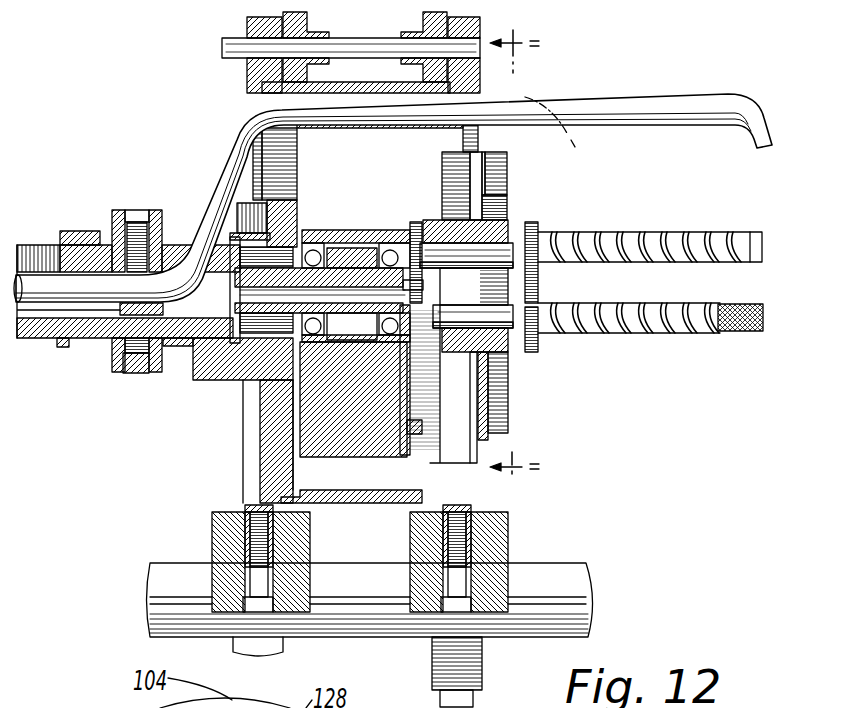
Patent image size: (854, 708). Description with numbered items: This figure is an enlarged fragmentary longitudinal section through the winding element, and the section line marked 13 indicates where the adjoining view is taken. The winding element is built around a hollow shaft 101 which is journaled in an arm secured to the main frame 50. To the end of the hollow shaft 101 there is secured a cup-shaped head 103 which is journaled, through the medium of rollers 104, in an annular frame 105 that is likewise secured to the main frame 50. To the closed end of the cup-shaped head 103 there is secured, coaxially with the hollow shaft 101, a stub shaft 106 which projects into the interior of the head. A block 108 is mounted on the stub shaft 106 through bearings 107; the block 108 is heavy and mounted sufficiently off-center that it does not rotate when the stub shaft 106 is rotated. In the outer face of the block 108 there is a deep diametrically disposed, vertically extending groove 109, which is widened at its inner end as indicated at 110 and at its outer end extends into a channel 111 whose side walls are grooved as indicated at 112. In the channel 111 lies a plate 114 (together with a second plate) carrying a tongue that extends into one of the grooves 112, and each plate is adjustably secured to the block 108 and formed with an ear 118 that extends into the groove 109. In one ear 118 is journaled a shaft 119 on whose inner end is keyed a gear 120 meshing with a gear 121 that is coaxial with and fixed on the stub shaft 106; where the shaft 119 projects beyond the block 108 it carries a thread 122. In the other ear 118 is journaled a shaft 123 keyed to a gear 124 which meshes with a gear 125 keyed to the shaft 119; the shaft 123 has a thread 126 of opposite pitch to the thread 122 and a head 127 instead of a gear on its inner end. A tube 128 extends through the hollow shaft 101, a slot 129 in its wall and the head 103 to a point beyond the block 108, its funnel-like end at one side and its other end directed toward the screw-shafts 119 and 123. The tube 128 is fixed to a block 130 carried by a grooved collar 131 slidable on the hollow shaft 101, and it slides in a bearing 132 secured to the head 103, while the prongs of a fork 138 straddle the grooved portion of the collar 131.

The main frame 50 is at (579, 583).
The hollow shaft 101 is at (54, 340).
The cup-shaped head 103 is at (272, 425).
The rollers 104 is at (424, 27).
The annular frame 105 is at (247, 70).
The stub shaft 106 is at (358, 282).
The bearings 107 is at (371, 238).
The block 108 is at (362, 452).
The groove 109 is at (472, 463).
The widened inner end of groove 110 is at (434, 452).
The channel 111 is at (488, 178).
The grooves 112 is at (490, 448).
The plate 114 is at (506, 206).
The ear 118 is at (452, 223).
The shaft 119 is at (497, 250).
The gear 120 is at (416, 224).
The gear 121 is at (409, 296).
The thread 122 is at (692, 250).
The shaft 123 is at (724, 335).
The gear 124 is at (534, 335).
The gear 125 is at (534, 242).
The thread 126 is at (668, 335).
The head 127 is at (463, 330).
The tube 128 is at (585, 98).
The slot 129 is at (42, 233).
The block 130 is at (163, 314).
The grooved collar 131 is at (97, 243).
The bearing 132 is at (390, 127).
The fork 138 is at (128, 372).
The section line 13- 13 is at (534, 252).